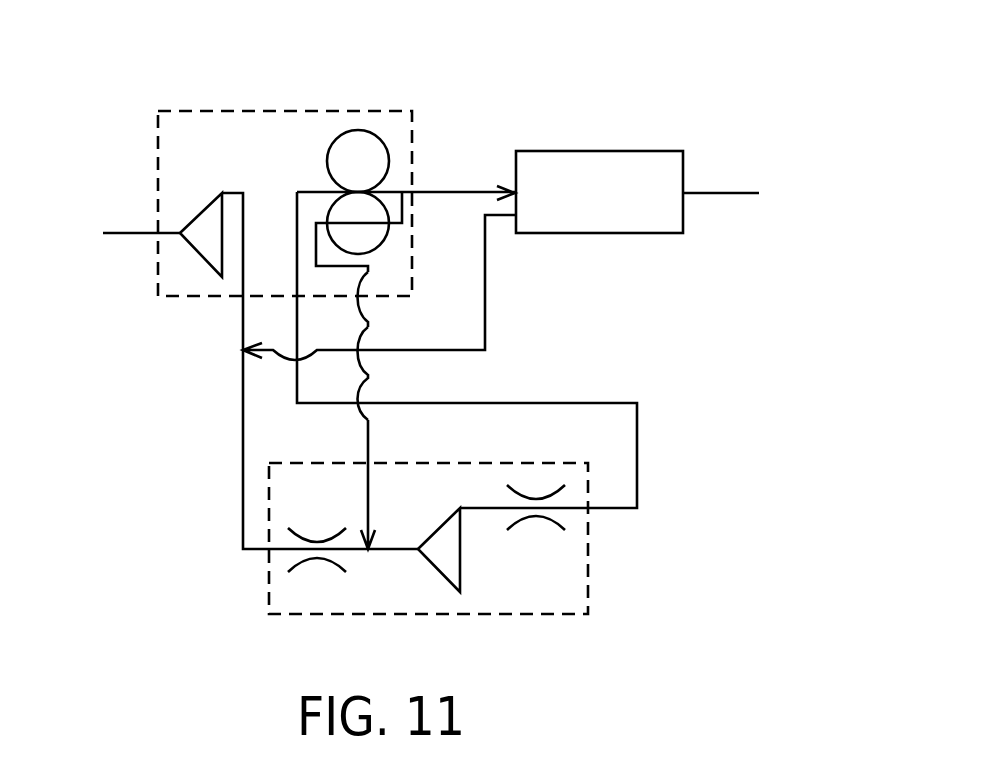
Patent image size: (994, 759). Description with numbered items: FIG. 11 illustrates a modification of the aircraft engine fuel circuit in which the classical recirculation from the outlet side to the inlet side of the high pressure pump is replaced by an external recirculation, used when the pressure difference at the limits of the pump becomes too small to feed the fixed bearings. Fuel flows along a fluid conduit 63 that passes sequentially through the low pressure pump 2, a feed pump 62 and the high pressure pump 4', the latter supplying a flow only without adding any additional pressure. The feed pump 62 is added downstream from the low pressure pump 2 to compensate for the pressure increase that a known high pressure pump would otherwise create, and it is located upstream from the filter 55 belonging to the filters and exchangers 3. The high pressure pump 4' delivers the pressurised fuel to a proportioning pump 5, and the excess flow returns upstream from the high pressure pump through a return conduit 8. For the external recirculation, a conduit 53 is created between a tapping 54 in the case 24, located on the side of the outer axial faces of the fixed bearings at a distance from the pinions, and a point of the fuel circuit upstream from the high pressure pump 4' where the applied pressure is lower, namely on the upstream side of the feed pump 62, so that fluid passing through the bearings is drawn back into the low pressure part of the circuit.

The low pressure pump 2 is at (203, 243).
The case 24 is at (387, 110).
The high pressure pump 4' is at (409, 171).
The proportioning pump 5 is at (600, 151).
The return conduit 8 is at (485, 280).
The tapping 54 is at (365, 305).
The conduit 53 is at (368, 375).
The fluid conduit 63 is at (242, 398).
The filters and exchangers 3 is at (258, 573).
The filter 55 is at (535, 517).
The feed pump 62 is at (433, 565).